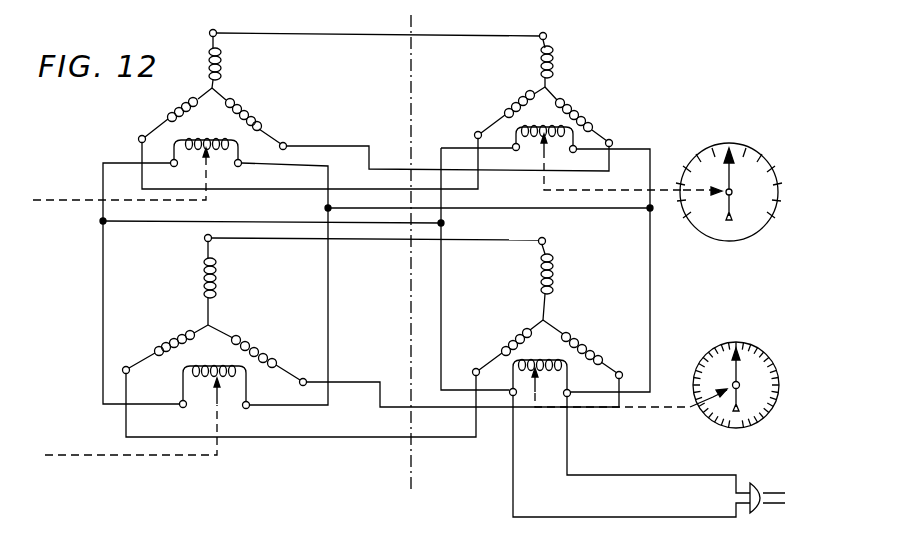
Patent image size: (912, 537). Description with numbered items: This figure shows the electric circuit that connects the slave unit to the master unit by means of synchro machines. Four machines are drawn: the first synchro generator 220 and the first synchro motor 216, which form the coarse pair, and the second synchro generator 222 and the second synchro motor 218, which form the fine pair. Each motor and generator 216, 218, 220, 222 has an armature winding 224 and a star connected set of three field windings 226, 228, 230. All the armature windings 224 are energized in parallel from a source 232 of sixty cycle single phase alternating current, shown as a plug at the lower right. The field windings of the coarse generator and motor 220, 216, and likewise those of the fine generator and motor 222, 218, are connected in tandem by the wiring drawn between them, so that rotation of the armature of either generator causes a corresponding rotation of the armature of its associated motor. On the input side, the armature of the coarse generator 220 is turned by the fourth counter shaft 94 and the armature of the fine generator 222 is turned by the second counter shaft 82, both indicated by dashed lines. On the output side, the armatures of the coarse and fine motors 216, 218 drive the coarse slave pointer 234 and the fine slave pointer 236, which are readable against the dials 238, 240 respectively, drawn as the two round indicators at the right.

The second counter shaft 82 is at (92, 452).
The fourth counter shaft 94 is at (77, 200).
The first synchro motor 216 is at (556, 90).
The second synchro motor 218 is at (610, 346).
The first synchro generator 220 is at (365, 90).
The second synchro generator 222 is at (280, 325).
The armature winding 224 is at (180, 137).
The field winding 226 is at (218, 58).
The field winding 228 is at (510, 105).
The field winding 230 is at (562, 100).
The source of 60 cycle single phase alternating current 232 is at (773, 488).
The coarse slave pointer 234 is at (708, 184).
The fine slave pointer 236 is at (742, 368).
The dial 238 is at (736, 188).
The dial 240 is at (743, 373).